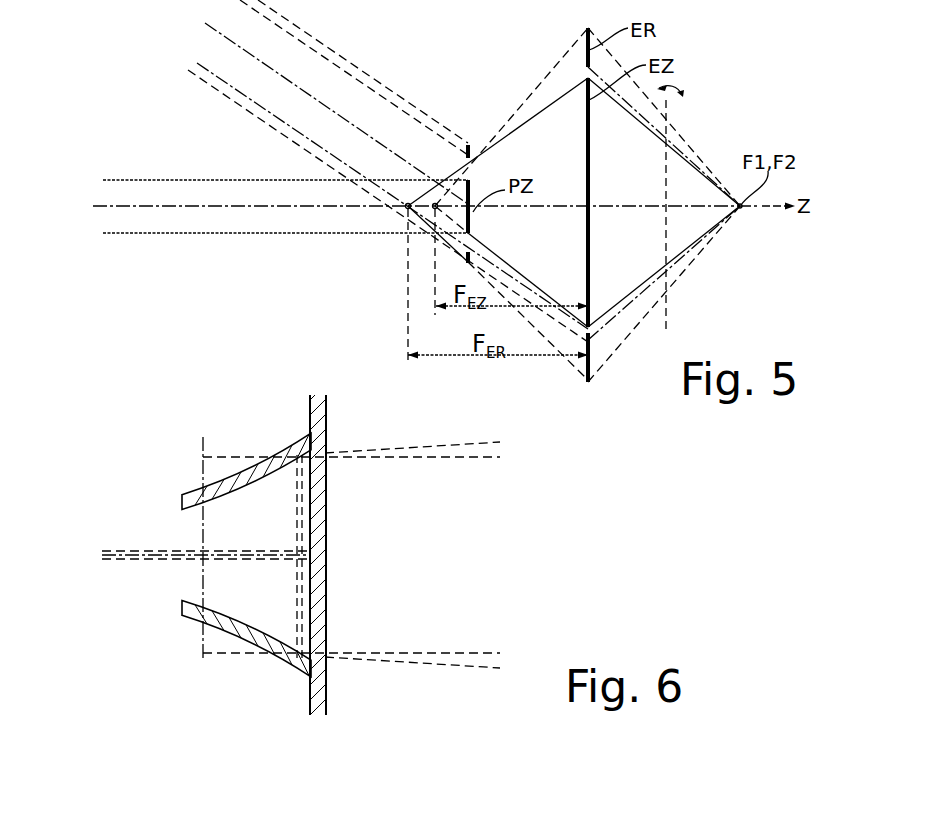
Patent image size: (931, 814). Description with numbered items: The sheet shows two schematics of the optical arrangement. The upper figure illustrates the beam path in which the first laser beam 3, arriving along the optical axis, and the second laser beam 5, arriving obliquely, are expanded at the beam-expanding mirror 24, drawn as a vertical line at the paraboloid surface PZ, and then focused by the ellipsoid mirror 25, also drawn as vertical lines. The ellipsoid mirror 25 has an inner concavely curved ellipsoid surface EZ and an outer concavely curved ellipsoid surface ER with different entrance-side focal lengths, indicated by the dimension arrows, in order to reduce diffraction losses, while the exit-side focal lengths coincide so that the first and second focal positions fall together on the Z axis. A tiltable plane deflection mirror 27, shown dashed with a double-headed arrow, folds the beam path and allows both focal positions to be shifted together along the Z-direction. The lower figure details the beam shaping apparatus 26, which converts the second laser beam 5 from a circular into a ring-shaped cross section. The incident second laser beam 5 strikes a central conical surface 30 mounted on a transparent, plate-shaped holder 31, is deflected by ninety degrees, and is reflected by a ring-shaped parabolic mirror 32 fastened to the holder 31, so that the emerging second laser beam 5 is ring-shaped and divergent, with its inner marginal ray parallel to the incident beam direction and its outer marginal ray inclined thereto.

In FIG. 5, the first laser beam 3 is at (163, 236).
In FIG. 5, the second laser beam 5 is at (312, 44).
In FIG. 6, the second laser beam 5 is at (116, 551).
In FIG. 5, the beam-expanding mirror 24 is at (463, 266).
In FIG. 5, the ellipsoid mirror 25 is at (575, 380).
In FIG. 5, the deflection mirror 27 is at (667, 172).
In FIG. 6, the beam shaping apparatus 26 is at (128, 607).
In FIG. 6, the conical surface 30 is at (313, 555).
In FIG. 6, the plate-shaped holder 31 is at (320, 422).
In FIG. 6, the ring-shaped parabolic mirror 32 is at (268, 463).